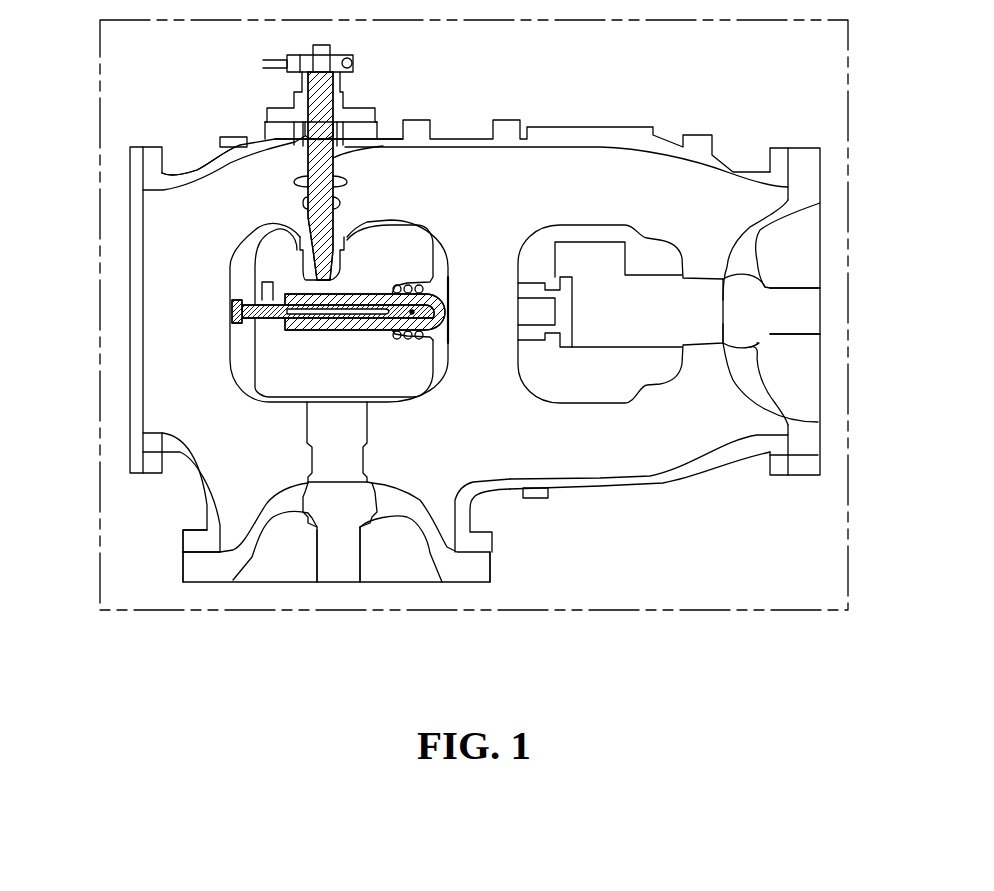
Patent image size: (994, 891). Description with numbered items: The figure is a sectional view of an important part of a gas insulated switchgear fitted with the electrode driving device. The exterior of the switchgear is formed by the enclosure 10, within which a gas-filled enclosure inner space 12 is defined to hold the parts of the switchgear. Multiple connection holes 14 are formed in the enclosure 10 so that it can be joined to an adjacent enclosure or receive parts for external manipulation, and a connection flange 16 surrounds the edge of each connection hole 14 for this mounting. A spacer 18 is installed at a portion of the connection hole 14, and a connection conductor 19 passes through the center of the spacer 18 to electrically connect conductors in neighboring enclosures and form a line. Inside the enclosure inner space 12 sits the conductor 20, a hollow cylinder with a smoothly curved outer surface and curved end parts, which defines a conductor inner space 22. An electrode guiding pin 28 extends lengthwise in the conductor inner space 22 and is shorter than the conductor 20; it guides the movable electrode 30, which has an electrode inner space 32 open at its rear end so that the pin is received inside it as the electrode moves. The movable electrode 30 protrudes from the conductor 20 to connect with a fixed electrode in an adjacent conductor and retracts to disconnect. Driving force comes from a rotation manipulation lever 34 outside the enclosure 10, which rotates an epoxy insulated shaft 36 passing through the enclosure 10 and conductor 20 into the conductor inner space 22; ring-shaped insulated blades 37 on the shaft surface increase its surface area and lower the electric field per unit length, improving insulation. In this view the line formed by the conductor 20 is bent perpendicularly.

The enclosure 10 is at (665, 487).
The enclosure inner space 12 is at (573, 432).
The connection hole 14 is at (128, 388).
The connection flange 16 is at (155, 172).
The spacer 18 is at (765, 408).
The connection conductor 19 is at (808, 300).
The conductor 20 is at (232, 256).
The conductor inner space 22 is at (322, 349).
The electrode guiding pin 28 is at (238, 306).
The movable electrode 30 is at (416, 286).
The electrode inner space 32 is at (445, 347).
The rotation manipulation lever 34 is at (355, 62).
The insulated shaft 36 is at (247, 138).
The insulated blade 37 is at (430, 140).